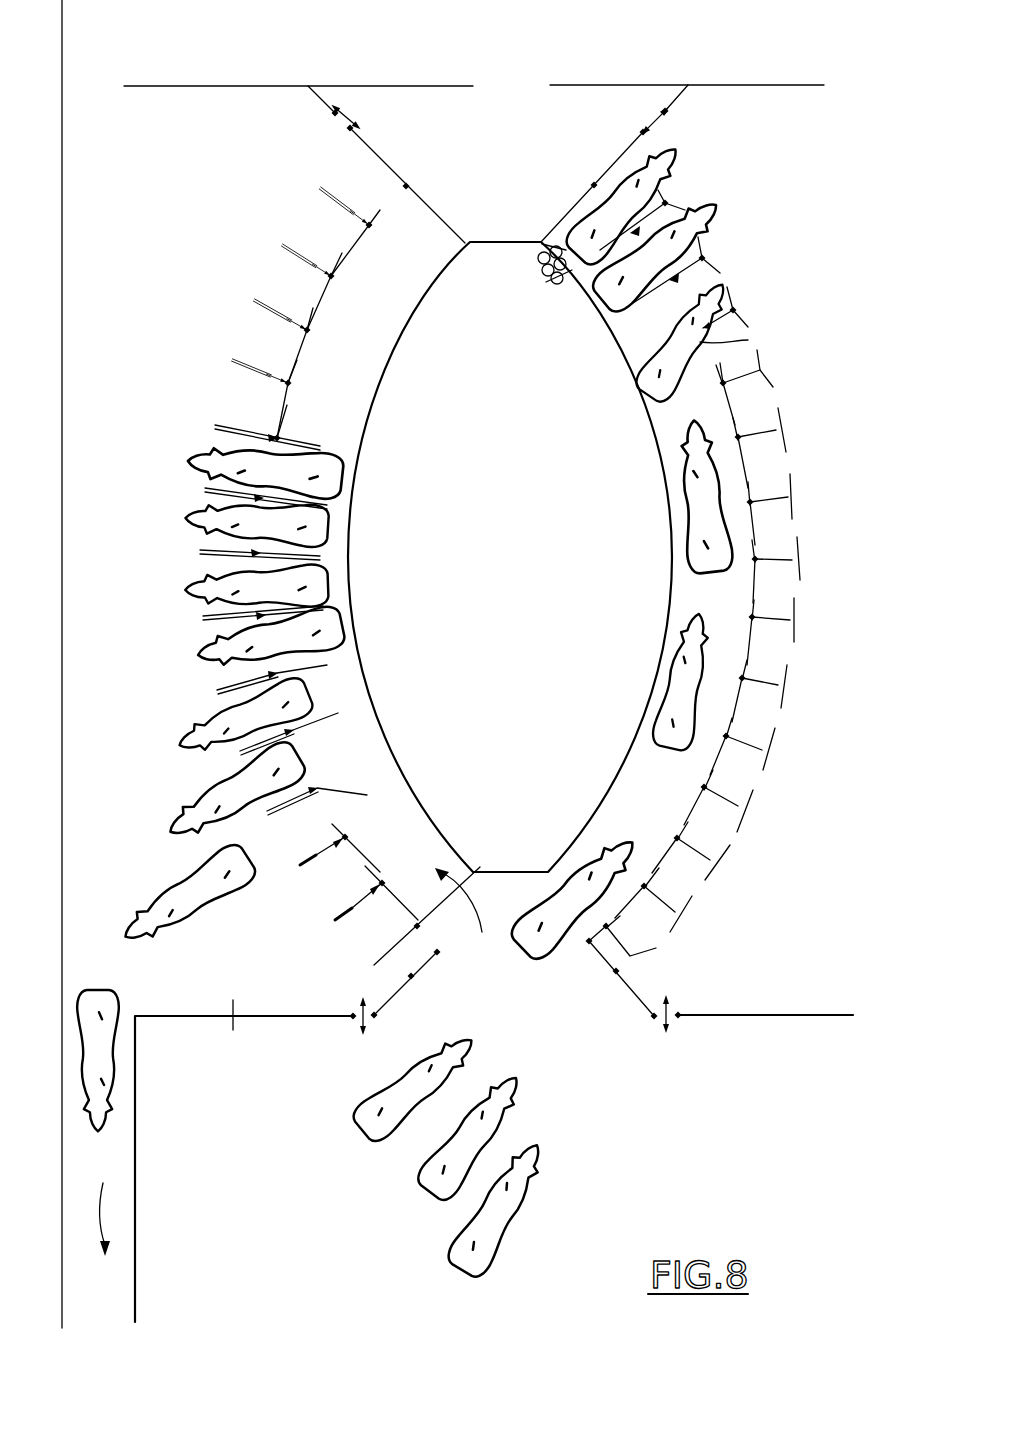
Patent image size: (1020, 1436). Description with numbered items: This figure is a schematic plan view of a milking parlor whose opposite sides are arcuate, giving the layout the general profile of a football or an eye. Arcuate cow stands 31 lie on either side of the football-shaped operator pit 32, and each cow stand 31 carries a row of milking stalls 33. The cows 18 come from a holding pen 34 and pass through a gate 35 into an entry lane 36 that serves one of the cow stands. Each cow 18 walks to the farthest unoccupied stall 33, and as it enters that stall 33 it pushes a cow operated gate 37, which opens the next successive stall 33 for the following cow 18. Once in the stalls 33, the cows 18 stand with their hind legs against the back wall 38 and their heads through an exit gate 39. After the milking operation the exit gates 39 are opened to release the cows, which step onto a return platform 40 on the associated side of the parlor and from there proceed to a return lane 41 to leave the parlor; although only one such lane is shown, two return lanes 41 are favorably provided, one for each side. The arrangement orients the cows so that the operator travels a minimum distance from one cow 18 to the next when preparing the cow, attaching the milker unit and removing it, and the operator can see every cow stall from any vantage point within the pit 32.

The cow 18 is at (657, 187).
The cow stand 31 is at (349, 680).
The operator pit 32 is at (510, 557).
The milking stall 33 is at (293, 405).
The holding pen 34 is at (730, 1162).
The gate 35 is at (573, 947).
The entry lane 36 is at (708, 585).
The cow operated gate 37 is at (700, 342).
The back wall 38 is at (588, 292).
The exit gate 39 is at (790, 670).
The return platform 40 is at (880, 510).
The return lane 41 is at (122, 1182).